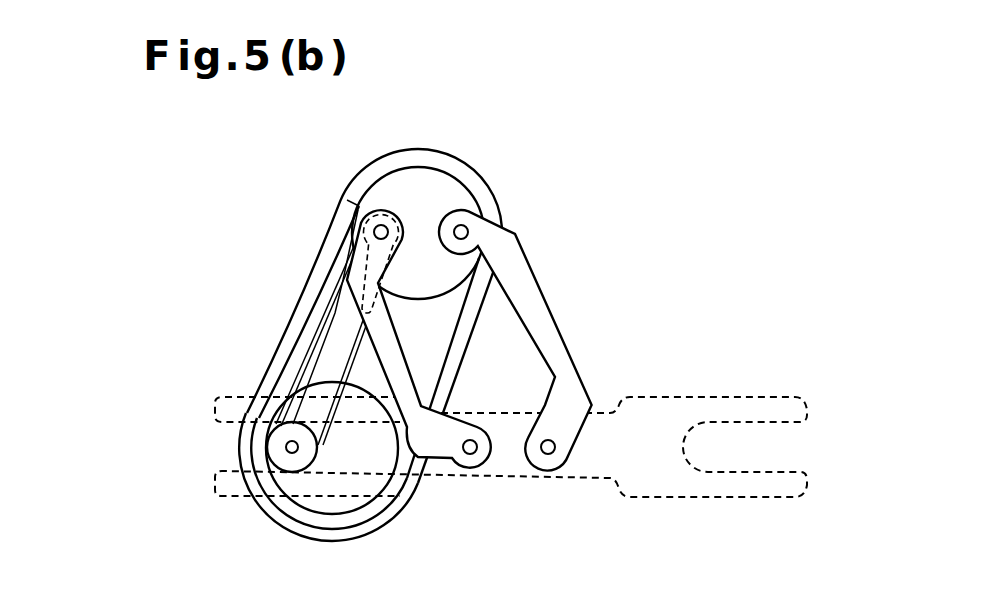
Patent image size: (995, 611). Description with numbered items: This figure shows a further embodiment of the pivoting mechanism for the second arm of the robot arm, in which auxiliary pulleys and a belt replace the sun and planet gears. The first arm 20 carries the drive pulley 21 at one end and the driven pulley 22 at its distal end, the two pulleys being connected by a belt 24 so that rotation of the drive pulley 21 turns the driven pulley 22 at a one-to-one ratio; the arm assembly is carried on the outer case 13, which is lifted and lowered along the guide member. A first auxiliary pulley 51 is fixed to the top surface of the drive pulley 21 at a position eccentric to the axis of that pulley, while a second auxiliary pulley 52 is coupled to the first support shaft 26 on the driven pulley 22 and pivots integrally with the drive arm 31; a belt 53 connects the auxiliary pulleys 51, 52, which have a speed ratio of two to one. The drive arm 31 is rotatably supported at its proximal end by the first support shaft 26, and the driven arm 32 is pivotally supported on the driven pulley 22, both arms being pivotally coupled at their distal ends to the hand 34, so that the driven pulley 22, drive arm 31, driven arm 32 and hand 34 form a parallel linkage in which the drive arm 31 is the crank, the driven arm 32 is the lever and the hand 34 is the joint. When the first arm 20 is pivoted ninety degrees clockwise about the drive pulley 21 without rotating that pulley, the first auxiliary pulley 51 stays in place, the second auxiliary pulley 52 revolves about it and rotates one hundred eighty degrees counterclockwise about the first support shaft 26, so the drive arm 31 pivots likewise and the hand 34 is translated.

The outer case 13 is at (274, 523).
The first arm 20 is at (329, 231).
The drive pulley 21 is at (352, 504).
The driven pulley 22 is at (462, 186).
The belt 24 is at (460, 325).
The first support shaft 26 is at (348, 198).
The drive arm 31 is at (386, 322).
The driven arm 32 is at (545, 305).
The hand 34 is at (763, 396).
The first auxiliary pulley 51 is at (310, 458).
The second auxiliary pulley 52 is at (392, 213).
The belt 53 is at (312, 327).